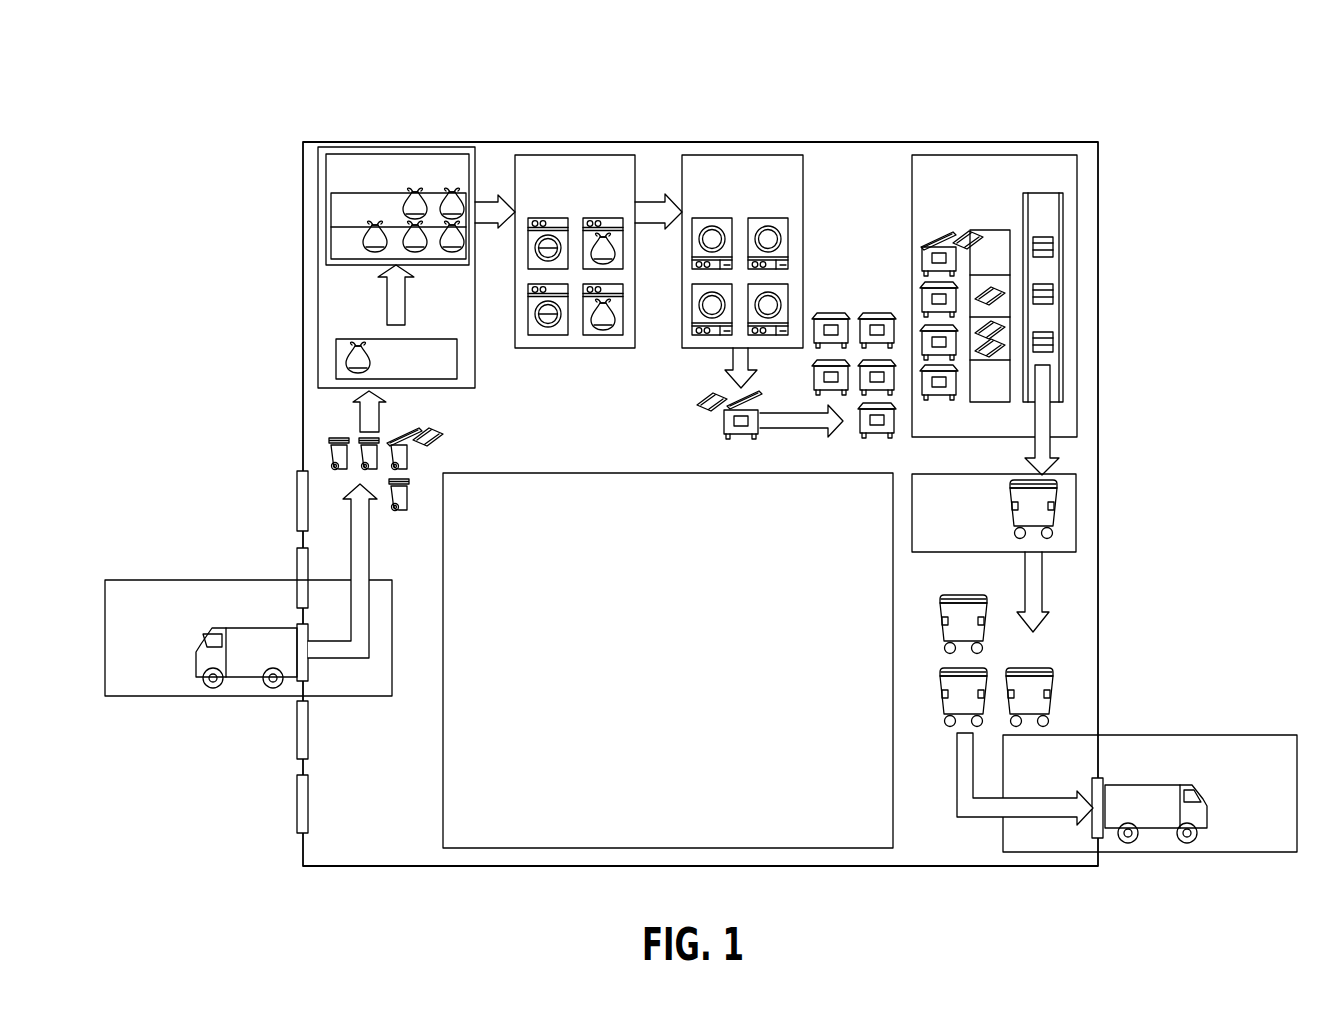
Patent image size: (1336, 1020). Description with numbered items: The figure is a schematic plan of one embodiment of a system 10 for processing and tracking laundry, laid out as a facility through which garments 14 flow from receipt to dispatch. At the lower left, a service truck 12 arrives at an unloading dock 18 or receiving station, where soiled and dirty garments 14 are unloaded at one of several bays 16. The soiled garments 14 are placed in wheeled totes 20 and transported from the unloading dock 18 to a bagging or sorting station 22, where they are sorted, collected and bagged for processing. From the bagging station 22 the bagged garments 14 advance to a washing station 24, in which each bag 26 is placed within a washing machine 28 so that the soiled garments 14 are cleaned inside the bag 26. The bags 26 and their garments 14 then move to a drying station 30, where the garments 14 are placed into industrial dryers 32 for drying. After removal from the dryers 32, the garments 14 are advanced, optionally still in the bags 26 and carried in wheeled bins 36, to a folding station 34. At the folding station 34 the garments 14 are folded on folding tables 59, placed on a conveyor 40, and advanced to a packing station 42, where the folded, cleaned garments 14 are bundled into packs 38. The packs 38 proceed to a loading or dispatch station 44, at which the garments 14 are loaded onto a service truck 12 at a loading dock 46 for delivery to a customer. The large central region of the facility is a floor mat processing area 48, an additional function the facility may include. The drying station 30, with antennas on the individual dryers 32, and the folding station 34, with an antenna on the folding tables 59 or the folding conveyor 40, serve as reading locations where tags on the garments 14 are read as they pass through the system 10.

The system 10 is at (287, 84).
The service truck 12 is at (268, 665).
The garments 14 is at (441, 438).
The bays 16 is at (297, 501).
The unloading dock 18 is at (370, 700).
The wheeled totes 20 is at (334, 436).
The bagging station 22 is at (317, 290).
The washing station 24 is at (534, 153).
The bag 26 is at (364, 242).
The washing machine 28 is at (620, 218).
The drying station 30 is at (708, 153).
The dryers 32 is at (774, 218).
The folding station 34 is at (938, 154).
The wheeled bins 36 is at (835, 314).
The packs 38 is at (1048, 518).
The conveyor 40 is at (1045, 193).
The packing station 42 is at (1081, 493).
The loading station 44 is at (1061, 788).
The loading dock 46 is at (1134, 734).
The floor mat processing area 48 is at (692, 768).
The folding tables 59 is at (1000, 230).